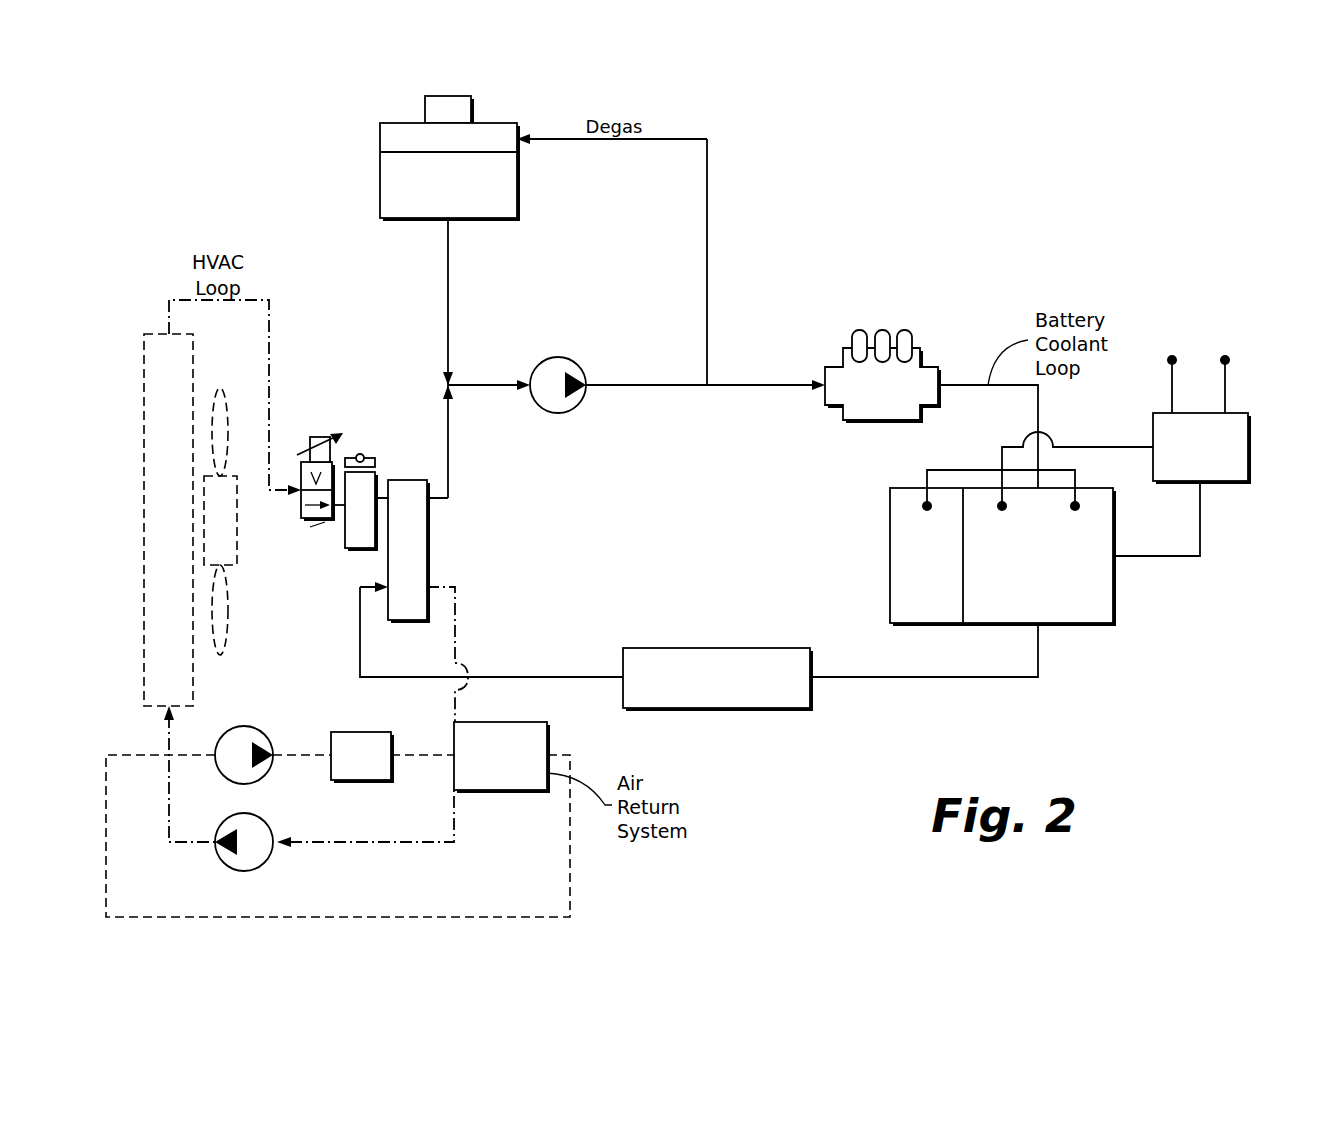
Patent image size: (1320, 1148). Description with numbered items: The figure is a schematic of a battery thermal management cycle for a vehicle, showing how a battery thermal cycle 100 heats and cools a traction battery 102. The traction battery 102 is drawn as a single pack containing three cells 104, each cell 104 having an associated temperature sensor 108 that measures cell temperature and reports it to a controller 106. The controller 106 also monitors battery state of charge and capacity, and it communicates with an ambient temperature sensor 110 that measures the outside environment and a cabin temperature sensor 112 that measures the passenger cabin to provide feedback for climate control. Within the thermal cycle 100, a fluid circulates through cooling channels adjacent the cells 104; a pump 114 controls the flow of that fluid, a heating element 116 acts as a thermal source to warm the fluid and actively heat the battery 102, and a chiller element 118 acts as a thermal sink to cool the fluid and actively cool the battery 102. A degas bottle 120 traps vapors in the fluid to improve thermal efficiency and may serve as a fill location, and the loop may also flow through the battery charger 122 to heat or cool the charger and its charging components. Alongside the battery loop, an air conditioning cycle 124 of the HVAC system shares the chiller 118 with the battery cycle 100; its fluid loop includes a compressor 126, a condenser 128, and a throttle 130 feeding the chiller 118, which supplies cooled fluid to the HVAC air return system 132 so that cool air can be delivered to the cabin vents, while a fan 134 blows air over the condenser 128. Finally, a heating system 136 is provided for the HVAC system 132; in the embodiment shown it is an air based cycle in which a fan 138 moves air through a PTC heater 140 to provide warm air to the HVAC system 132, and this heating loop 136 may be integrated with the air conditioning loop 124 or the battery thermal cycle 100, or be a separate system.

The battery thermal cycle 100 is at (925, 677).
The traction battery 102 is at (974, 570).
The cells 104 is at (890, 558).
The controller 106 is at (1220, 482).
The temperature sensor 108 is at (922, 506).
The ambient temperature sensor 110 is at (1172, 355).
The cabin temperature sensor 112 is at (1225, 355).
The pump 114 is at (558, 357).
The heating element 116 is at (850, 348).
The chiller element 118 is at (427, 552).
The degas bottle 120 is at (380, 138).
The battery charger 122 is at (717, 648).
The air conditioning cycle 124 is at (454, 815).
The compressor 126 is at (244, 813).
The condenser 128 is at (158, 334).
The throttle 130 is at (360, 454).
The HVAC air return system 132 is at (547, 740).
The fan 134 is at (237, 520).
The heating system 136 is at (350, 917).
The fan 138 is at (244, 726).
The PTC heater 140 is at (362, 732).